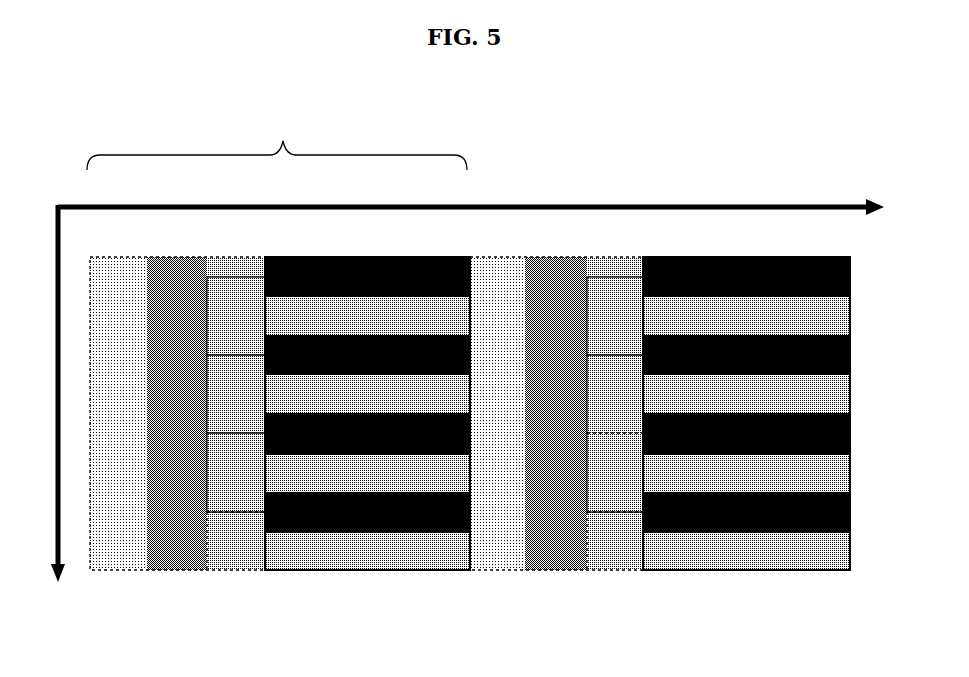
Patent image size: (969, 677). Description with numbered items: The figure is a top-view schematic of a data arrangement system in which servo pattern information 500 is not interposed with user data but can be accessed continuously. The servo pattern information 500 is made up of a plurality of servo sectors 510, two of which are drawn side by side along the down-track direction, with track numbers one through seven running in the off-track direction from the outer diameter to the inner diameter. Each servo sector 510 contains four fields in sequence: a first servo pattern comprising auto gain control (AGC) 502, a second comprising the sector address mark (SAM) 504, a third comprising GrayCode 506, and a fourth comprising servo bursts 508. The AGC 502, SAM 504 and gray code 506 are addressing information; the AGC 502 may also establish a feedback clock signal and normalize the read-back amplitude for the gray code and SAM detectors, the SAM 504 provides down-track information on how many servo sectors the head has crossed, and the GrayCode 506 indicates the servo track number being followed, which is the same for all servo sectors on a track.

The servo pattern information 500 is at (806, 96).
The auto gain control (AGC) 502 is at (110, 550).
The sector address mark (SAM) 504 is at (553, 550).
The GrayCode 506 is at (247, 550).
The servo bursts 508 is at (373, 550).
The servo sector 510 is at (277, 133).